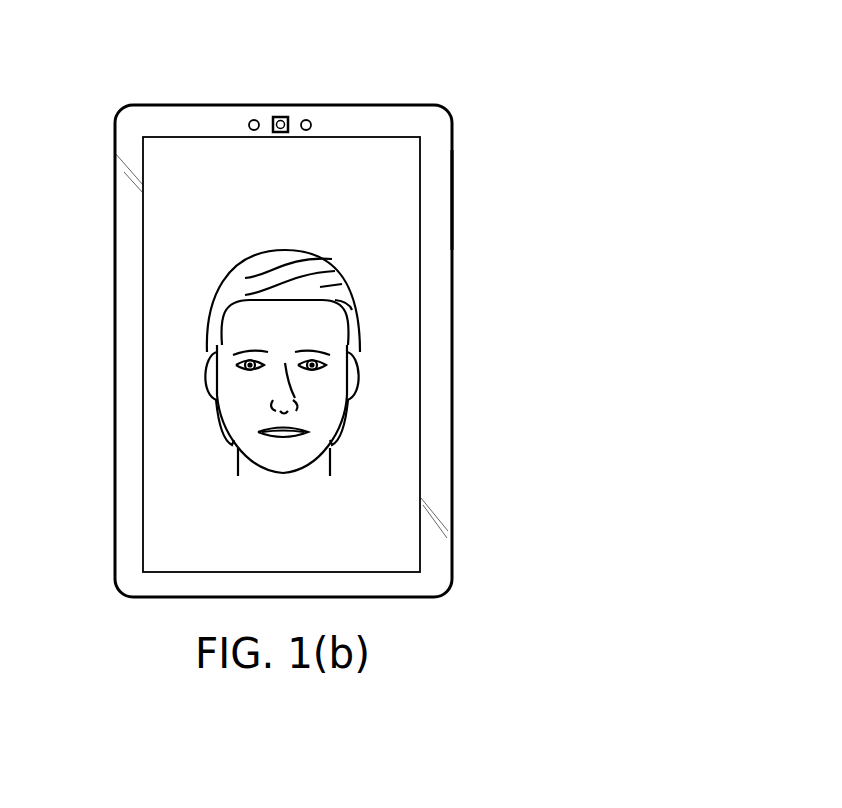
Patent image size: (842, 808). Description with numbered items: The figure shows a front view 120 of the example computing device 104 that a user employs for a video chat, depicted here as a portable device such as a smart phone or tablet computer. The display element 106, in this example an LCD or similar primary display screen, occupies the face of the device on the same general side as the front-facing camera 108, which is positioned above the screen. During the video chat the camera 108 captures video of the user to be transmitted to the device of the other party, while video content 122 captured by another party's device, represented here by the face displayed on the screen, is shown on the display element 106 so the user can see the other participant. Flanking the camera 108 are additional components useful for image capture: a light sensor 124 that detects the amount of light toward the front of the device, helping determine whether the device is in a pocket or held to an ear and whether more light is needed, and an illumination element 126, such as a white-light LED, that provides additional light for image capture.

The front view 120 is at (660, 138).
The computing device 104 is at (420, 215).
The display element 106 is at (420, 335).
The front-facing camera 108 is at (280, 117).
The video content 122 is at (178, 304).
The light sensor 124 is at (250, 121).
The illumination element 126 is at (310, 119).